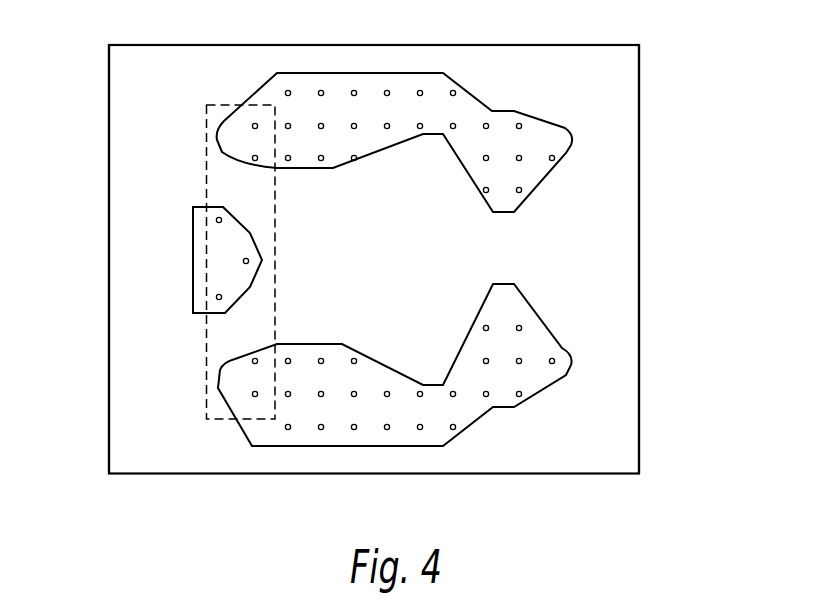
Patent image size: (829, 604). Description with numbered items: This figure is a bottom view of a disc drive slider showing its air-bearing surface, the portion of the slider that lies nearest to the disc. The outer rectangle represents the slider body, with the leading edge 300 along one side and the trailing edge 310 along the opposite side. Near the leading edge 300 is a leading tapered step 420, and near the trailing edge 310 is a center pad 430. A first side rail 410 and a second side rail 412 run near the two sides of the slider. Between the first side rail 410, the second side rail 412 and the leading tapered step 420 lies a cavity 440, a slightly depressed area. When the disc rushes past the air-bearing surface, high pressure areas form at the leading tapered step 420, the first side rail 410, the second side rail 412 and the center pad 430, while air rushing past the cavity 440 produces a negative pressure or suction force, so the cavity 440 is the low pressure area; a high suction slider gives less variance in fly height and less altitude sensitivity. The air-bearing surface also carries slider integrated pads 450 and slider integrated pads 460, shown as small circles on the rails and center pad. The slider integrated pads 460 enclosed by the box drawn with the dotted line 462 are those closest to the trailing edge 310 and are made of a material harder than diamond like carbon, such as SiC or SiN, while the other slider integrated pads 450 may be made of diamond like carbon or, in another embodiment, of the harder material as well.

The leading edge 300 is at (640, 298).
The trailing edge 310 is at (109, 348).
The first side rail 410 is at (368, 73).
The second side rail 412 is at (277, 447).
The leading tapered step 420 is at (609, 254).
The center pad 430 is at (216, 267).
The cavity 440 is at (402, 315).
The slider integrated pads 450 is at (519, 393).
The slider integrated pads 460 is at (256, 396).
The dotted line 462 is at (206, 165).